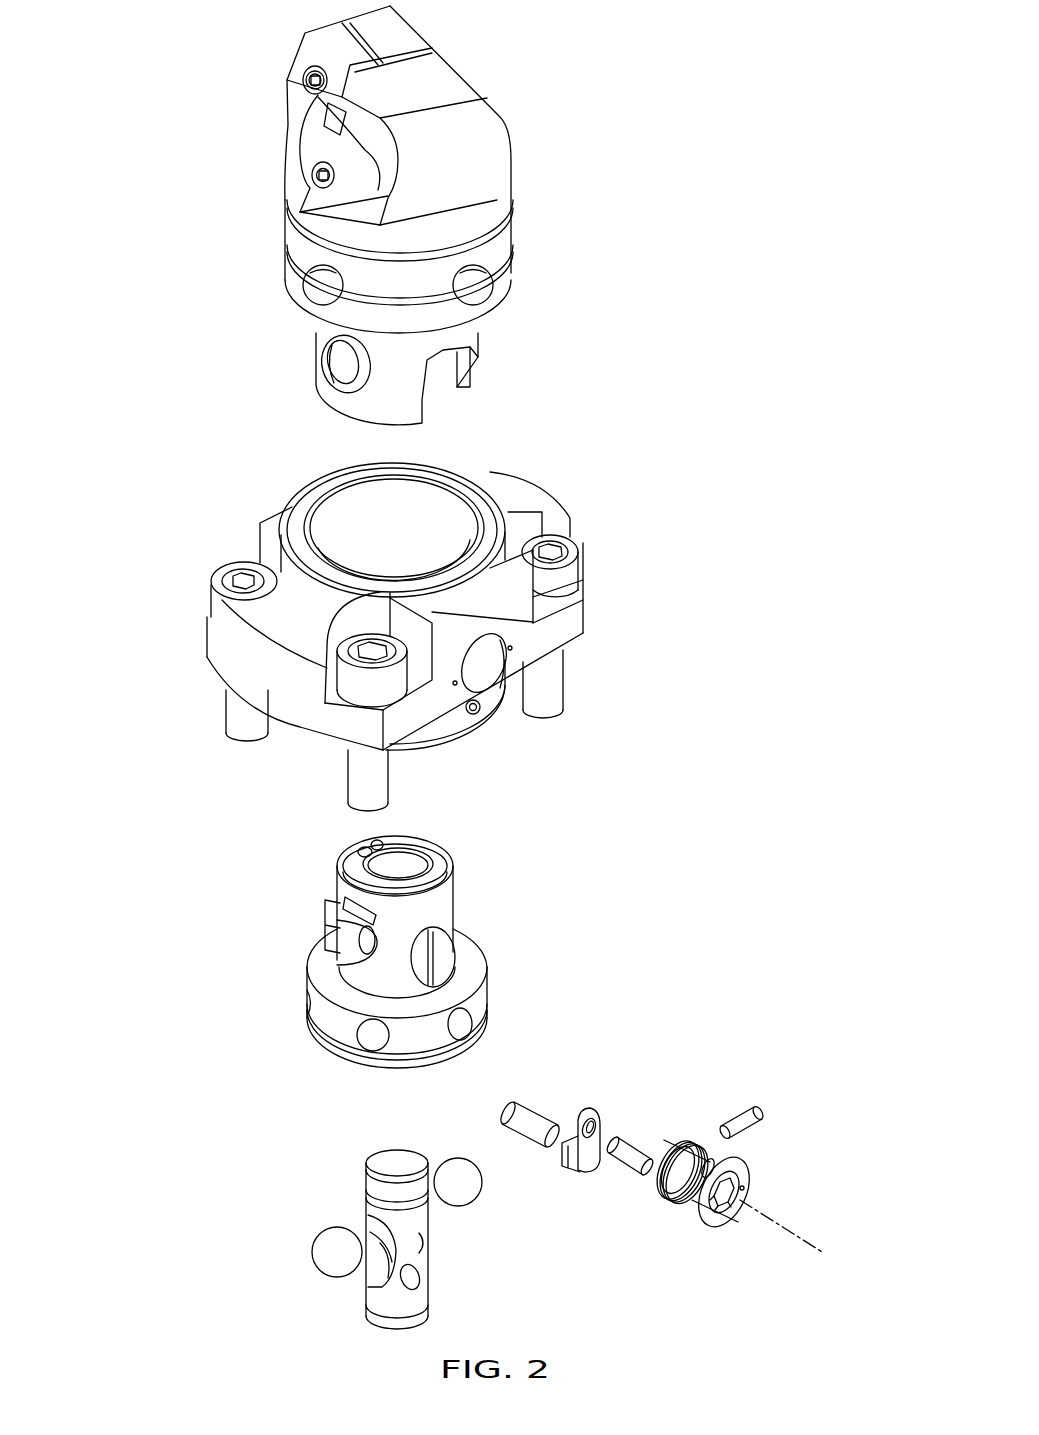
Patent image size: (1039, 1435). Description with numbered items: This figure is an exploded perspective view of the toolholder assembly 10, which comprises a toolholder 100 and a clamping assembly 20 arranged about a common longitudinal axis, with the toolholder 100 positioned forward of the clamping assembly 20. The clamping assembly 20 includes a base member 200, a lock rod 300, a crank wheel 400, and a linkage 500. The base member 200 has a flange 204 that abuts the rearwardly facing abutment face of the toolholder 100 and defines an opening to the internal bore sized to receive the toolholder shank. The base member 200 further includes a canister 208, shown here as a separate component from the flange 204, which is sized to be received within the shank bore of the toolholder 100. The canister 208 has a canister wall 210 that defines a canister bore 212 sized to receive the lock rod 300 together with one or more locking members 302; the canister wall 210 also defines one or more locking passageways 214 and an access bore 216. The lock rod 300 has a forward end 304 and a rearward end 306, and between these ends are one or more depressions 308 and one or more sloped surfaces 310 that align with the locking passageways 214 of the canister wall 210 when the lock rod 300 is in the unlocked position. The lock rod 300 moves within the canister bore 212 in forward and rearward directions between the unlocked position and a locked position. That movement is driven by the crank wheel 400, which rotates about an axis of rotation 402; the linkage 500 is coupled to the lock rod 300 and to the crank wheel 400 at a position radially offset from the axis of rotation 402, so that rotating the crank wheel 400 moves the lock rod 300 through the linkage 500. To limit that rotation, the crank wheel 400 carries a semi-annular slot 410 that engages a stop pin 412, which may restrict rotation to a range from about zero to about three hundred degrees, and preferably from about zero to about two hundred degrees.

The toolholder assembly 10 is at (482, 693).
The clamping assembly 20 is at (833, 463).
The toolholder 100 is at (471, 215).
The base member 200 is at (462, 610).
The flange 204 is at (419, 503).
The canister 208 is at (446, 916).
The canister wall 210 is at (431, 917).
The canister bore 212 is at (411, 822).
The locking passageways 214 is at (317, 964).
The access bore 216 is at (481, 972).
The lock rod 300 is at (389, 1225).
The locking members 302 is at (472, 1138).
The forward end 304 is at (320, 1157).
The rearward end 306 is at (326, 1343).
The depressions 308 is at (323, 1268).
The sloped surfaces 310 is at (328, 1234).
The crank wheel 400 is at (747, 1170).
The axis of rotation 402 is at (787, 1227).
The semi-annular slot 410 is at (747, 1160).
The stop pin 412 is at (768, 1075).
The linkage 500 is at (610, 1193).